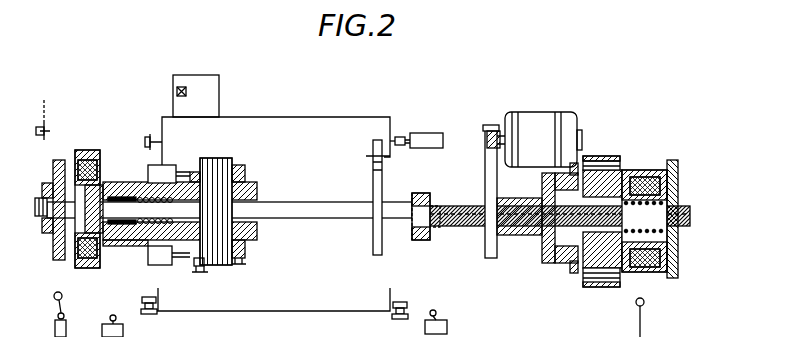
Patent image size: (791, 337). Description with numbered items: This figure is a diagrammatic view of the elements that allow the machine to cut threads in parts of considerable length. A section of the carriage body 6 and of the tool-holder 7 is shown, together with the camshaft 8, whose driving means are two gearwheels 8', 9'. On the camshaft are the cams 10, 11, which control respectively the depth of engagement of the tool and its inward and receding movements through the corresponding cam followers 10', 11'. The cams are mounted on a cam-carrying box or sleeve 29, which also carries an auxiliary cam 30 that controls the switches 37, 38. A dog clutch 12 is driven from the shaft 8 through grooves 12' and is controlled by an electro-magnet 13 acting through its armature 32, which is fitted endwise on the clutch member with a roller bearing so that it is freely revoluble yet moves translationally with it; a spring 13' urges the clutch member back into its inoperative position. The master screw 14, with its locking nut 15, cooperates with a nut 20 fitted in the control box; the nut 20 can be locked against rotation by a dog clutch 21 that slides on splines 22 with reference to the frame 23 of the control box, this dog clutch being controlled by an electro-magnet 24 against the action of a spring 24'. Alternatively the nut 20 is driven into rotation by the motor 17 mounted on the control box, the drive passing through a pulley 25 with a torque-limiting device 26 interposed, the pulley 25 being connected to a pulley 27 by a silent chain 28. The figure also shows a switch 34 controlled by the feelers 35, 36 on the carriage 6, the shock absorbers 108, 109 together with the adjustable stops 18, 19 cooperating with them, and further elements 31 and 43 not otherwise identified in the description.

The carriage body 6 is at (352, 122).
The tool-holder 7 is at (214, 82).
The camshaft 8 is at (229, 197).
The gearwheel 8' is at (359, 197).
The gearwheel 9' is at (363, 161).
The cam 10 is at (216, 196).
The cam follower 10' is at (207, 278).
The cam 11 is at (250, 163).
The cam follower 11' is at (255, 267).
The dog clutch 12 is at (145, 250).
The grooves 12' is at (115, 249).
The electro-magnet 13 is at (96, 194).
The spring 13' is at (138, 268).
The master screw 14 is at (438, 198).
The locking nut 15 is at (418, 242).
The motor 17 is at (544, 124).
The adjustable stop 18 is at (148, 136).
The adjustable stop 19 is at (399, 136).
The nut 20 is at (526, 240).
The dog clutch 21 is at (630, 170).
The splines 22 is at (598, 288).
The frame 23 is at (598, 156).
The electro-magnet 24 is at (663, 208).
The spring 24' is at (560, 271).
The pulley 25 is at (486, 128).
The torque-limiting device 26 is at (492, 126).
The pulley 27 is at (486, 248).
The silent chain 28 is at (486, 158).
The cam-carrying box or sleeve 29 is at (254, 240).
The auxiliary cam 30 is at (195, 172).
The bolt 31 is at (50, 240).
The armature 32 is at (62, 160).
The switch 34 is at (447, 328).
The feeler 35 is at (156, 314).
The feeler 36 is at (392, 314).
The switch 37 is at (150, 172).
The switch 38 is at (164, 301).
The lever 43 is at (62, 302).
The shock absorber 108 is at (60, 116).
The shock absorber 109 is at (430, 133).